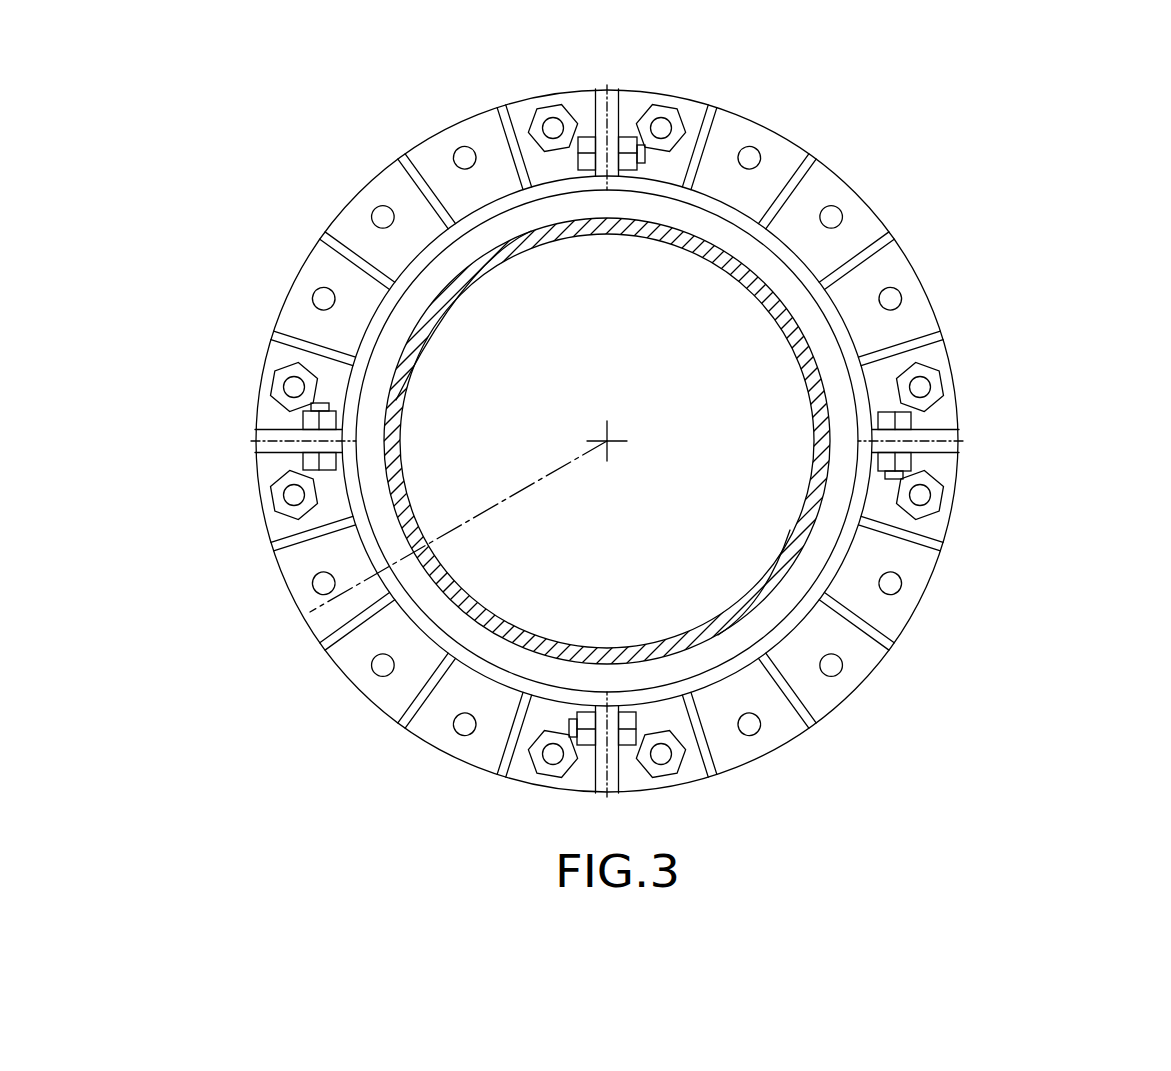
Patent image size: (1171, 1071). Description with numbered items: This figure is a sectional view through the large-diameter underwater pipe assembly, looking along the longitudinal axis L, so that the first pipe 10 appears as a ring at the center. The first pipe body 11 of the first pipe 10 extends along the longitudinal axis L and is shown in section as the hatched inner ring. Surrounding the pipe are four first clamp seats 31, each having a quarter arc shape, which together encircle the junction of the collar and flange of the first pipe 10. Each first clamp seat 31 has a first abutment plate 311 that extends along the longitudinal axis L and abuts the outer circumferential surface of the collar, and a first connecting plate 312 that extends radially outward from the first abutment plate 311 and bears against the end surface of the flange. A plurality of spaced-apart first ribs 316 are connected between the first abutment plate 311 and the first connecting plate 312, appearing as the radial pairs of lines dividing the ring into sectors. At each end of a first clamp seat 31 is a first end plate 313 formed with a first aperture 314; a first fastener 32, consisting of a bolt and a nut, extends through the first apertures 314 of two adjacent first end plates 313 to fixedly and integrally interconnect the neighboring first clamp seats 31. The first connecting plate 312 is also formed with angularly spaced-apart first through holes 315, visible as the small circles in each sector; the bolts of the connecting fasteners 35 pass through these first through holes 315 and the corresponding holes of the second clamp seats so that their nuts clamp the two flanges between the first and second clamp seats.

The first pipe 10 is at (762, 272).
The first pipe body 11 is at (770, 580).
The first clamp seat 31 is at (649, 426).
The first abutment plate 311 is at (717, 205).
The first connecting plate 312 is at (822, 187).
The first end plate 313 is at (933, 432).
The first aperture 314 is at (680, 441).
The first through hole 315 is at (895, 293).
The first rib 316 is at (913, 335).
The first fastener 32 is at (590, 143).
The connecting fastener 35 is at (667, 124).
The longitudinal axis L is at (300, 612).